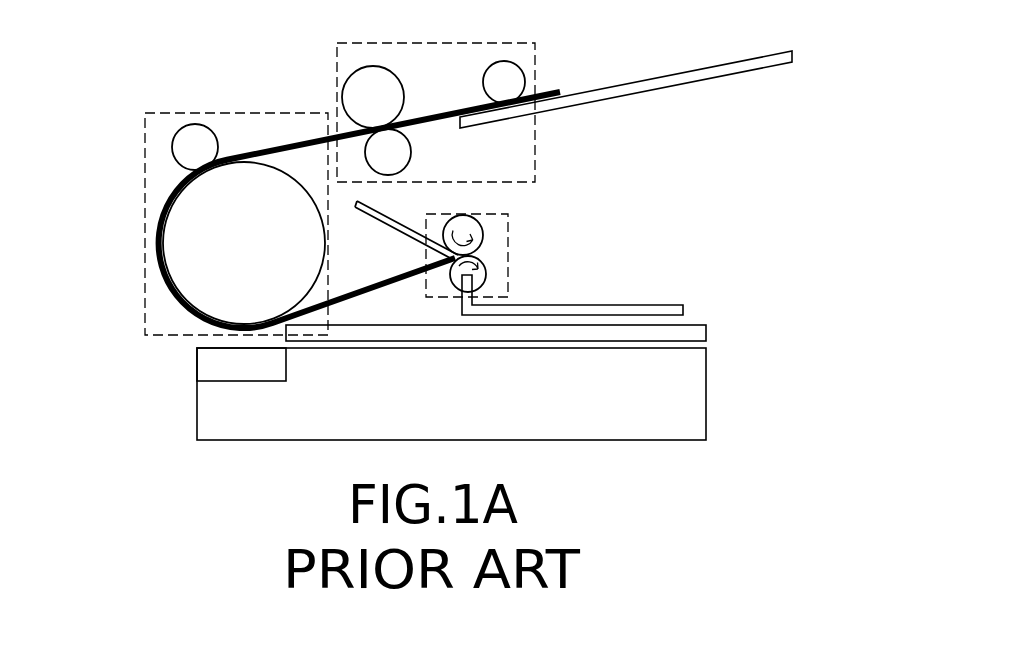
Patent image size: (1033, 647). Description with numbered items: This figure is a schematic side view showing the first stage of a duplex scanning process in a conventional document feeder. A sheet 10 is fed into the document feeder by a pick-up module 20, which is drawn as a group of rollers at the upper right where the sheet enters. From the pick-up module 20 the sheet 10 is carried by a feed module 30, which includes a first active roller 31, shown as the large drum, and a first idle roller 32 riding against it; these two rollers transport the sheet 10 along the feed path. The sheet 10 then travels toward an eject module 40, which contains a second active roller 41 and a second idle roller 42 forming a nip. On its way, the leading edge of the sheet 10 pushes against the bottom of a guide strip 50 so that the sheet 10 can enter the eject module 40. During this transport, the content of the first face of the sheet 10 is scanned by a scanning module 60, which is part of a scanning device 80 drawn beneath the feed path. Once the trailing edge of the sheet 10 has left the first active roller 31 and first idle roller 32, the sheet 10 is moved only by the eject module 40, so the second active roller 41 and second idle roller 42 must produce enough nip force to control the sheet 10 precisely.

The sheet 10 is at (400, 272).
The pick-up module 20 is at (486, 43).
The feed module 30 is at (144, 268).
The first active roller 31 is at (180, 228).
The first idle roller 32 is at (192, 125).
The eject module 40 is at (508, 292).
The second active roller 41 is at (482, 258).
The second idle roller 42 is at (468, 224).
The guide strip 50 is at (389, 217).
The scanning module 60 is at (212, 362).
The scanning device 80 is at (685, 412).